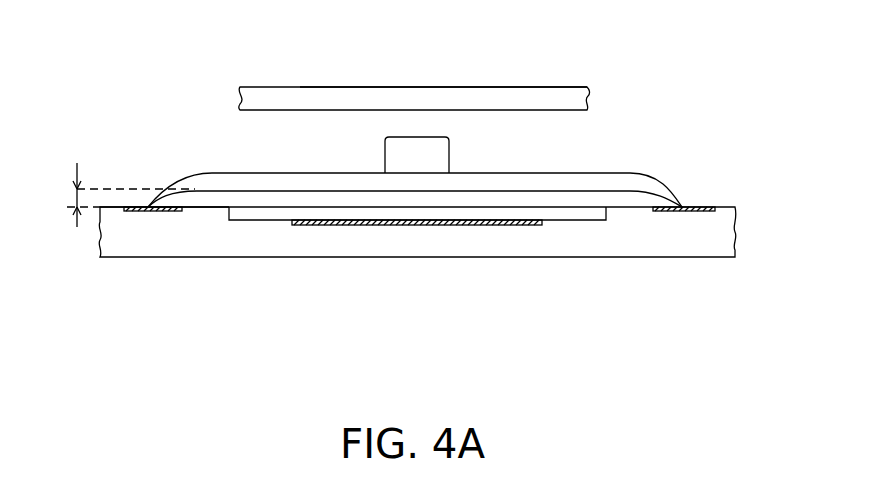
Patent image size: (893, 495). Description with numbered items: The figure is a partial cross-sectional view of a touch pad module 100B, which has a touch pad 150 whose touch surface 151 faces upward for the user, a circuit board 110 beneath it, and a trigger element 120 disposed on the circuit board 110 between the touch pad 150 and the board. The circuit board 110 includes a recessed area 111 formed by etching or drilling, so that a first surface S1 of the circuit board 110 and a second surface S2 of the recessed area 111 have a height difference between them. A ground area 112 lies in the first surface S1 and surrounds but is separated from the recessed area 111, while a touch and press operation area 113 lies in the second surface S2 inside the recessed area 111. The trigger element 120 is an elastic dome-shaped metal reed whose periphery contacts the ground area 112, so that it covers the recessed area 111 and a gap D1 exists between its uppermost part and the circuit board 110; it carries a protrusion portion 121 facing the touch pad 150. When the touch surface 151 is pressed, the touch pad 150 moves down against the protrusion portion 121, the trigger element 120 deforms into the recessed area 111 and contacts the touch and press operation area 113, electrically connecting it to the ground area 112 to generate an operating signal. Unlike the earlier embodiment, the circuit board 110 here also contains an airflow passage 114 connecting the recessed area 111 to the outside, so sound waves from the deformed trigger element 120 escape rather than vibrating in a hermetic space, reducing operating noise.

The touch pad module 100B is at (415, 233).
The circuit board 110 is at (725, 233).
The recessed area 111 is at (588, 213).
The ground area 112 is at (132, 212).
The touch and press operation area 113 is at (397, 226).
The airflow passage 114 is at (115, 214).
The trigger element 120 is at (585, 180).
The protrusion portion 121 is at (398, 157).
The touch pad 150 is at (298, 97).
The touch surface 151 is at (530, 88).
The first surface S1 is at (723, 207).
The second surface S2 is at (247, 220).
The gap D1 is at (117, 195).